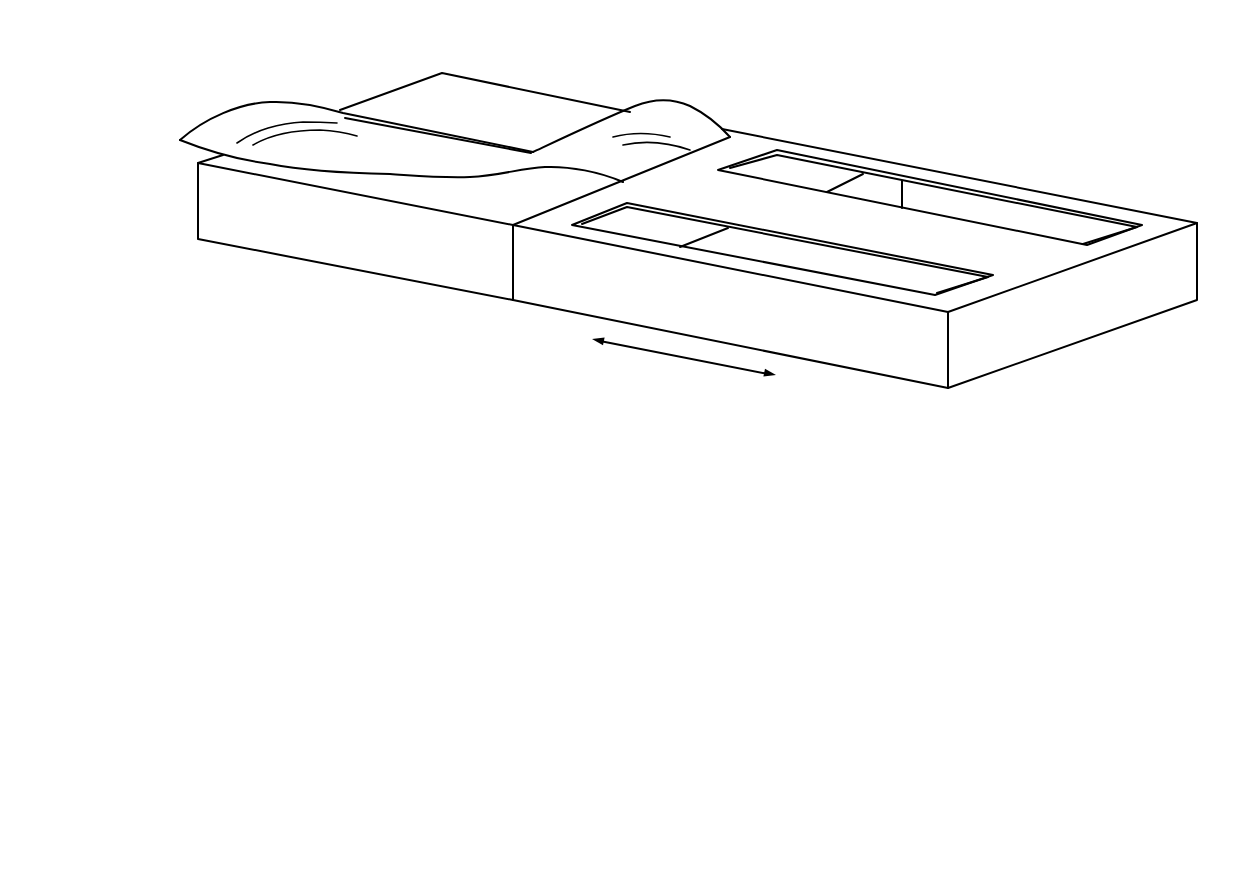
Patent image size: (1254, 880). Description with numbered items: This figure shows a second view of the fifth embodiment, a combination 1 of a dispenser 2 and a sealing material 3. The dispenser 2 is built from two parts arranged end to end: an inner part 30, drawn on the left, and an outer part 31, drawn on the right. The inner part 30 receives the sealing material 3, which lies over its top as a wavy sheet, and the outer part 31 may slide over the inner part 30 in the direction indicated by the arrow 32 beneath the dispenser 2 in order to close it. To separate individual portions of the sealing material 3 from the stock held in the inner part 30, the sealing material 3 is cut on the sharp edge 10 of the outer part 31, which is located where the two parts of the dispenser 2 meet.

The combination 1 is at (831, 108).
The dispenser 2 is at (885, 381).
The sealing material 3 is at (272, 118).
The sharp edge 10 is at (563, 210).
The inner part 30 is at (324, 246).
The outer part 31 is at (1003, 352).
The arrow 32 is at (683, 362).